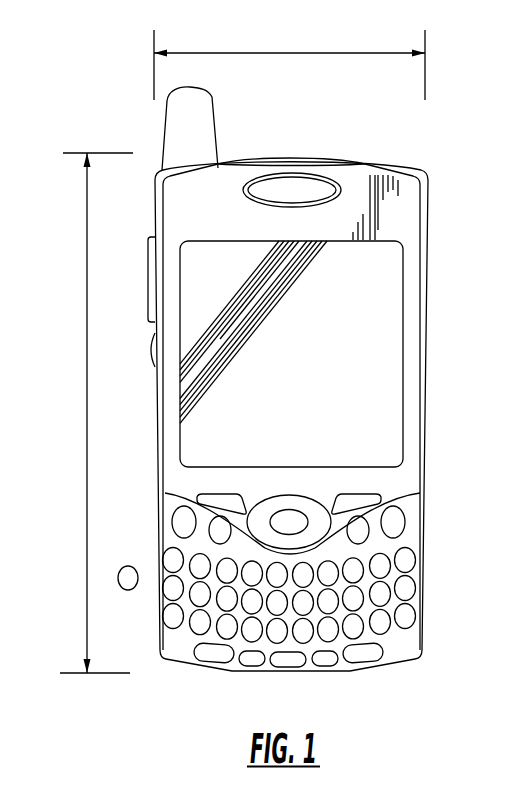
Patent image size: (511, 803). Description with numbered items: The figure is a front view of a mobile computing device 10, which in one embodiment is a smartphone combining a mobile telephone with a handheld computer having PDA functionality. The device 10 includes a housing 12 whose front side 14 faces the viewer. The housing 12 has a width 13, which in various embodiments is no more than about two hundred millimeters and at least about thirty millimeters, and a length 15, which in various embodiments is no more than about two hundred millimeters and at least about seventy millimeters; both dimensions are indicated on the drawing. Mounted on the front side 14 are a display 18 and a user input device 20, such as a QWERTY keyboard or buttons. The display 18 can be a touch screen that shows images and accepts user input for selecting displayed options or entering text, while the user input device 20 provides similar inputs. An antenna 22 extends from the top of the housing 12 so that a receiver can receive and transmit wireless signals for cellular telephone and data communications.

The mobile computing device 10 is at (329, 124).
The housing 12 is at (401, 192).
The width 13 is at (318, 51).
The front side 14 is at (211, 216).
The length 15 is at (86, 376).
The display 18 is at (388, 315).
The user input device 20 is at (408, 560).
The antenna 22 is at (200, 132).